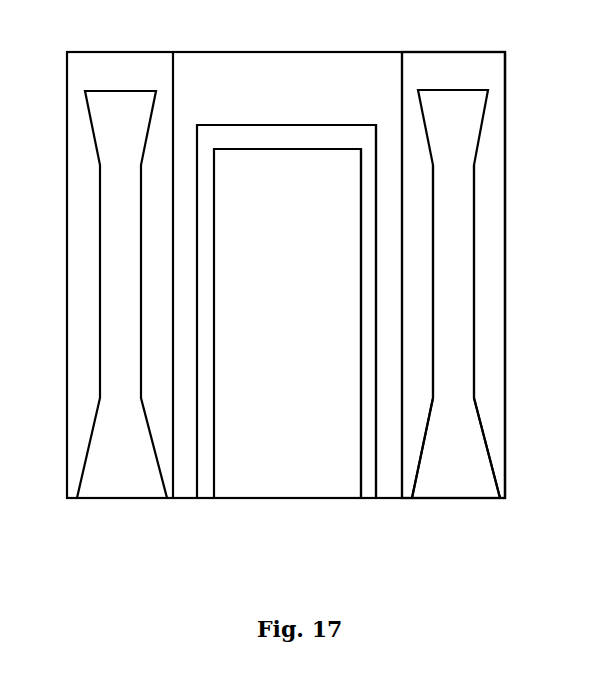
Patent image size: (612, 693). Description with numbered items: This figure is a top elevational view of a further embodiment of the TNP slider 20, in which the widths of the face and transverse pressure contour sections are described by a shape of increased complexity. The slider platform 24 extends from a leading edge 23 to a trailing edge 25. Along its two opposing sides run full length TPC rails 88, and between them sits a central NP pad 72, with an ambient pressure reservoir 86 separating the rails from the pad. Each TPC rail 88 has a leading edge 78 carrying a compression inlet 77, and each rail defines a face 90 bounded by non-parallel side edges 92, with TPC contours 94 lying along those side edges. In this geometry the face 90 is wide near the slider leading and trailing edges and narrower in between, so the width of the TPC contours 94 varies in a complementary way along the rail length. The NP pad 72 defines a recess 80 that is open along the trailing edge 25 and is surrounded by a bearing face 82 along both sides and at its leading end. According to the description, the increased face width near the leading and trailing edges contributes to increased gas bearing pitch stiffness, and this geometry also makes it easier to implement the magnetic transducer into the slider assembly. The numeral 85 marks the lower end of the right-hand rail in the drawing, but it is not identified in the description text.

The TNP slider 20 is at (35, 274).
The leading edge 23 is at (287, 52).
The slider platform 24 is at (506, 261).
The trailing edge 25 is at (285, 498).
The NP pad 72 is at (338, 498).
The compression inlet 77 is at (452, 63).
The leading edge of TPC rail 78 is at (455, 89).
The recess 80 is at (252, 485).
The bearing face 82 is at (207, 485).
The right tapered member 85 is at (457, 498).
The ambient pressure reservoir 86 is at (390, 485).
The TPC rails 88 is at (122, 498).
The face 90 is at (453, 463).
The side edges 92 is at (474, 229).
The TPC contours 94 is at (413, 371).